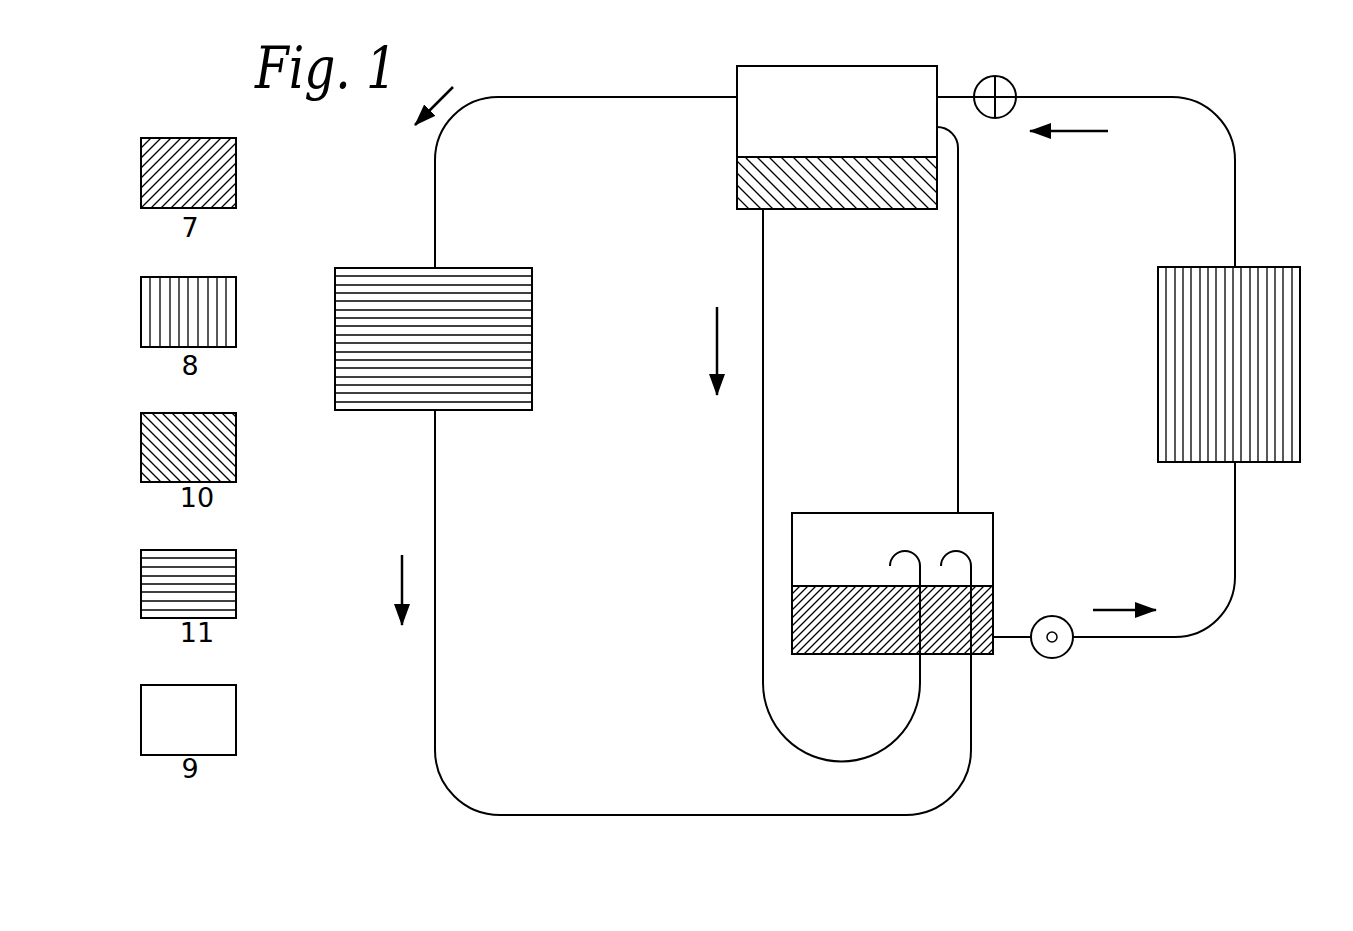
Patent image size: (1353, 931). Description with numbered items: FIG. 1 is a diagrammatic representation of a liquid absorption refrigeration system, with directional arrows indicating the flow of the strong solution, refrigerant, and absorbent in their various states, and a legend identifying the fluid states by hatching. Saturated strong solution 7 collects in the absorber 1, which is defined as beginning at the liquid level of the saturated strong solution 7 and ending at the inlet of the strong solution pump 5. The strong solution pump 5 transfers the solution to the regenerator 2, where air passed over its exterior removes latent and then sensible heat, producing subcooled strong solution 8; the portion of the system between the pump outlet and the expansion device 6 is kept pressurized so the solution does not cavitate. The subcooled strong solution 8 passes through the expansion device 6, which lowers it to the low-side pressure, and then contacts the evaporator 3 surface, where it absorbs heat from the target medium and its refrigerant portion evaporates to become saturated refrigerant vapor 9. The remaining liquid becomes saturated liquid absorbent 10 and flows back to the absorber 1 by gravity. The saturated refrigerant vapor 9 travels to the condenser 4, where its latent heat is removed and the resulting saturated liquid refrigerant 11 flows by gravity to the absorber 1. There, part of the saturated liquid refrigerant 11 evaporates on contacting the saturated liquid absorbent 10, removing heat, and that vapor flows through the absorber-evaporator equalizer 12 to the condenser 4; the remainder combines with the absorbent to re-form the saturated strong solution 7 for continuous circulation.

The absorber 1 is at (868, 505).
The regenerator 2 is at (1152, 377).
The evaporator 3 is at (846, 215).
The condenser 4 is at (540, 335).
The strong solution pump 5 is at (1076, 662).
The expansion device 6 is at (998, 128).
The saturated strong solution 7 is at (1208, 643).
The subcooled strong solution 8 is at (1195, 125).
The saturated refrigerant vapor 9 is at (464, 126).
The saturated liquid absorbent 10 is at (745, 497).
The saturated liquid refrigerant 11 is at (470, 775).
The absorber-evaporator equalizer 12 is at (968, 290).